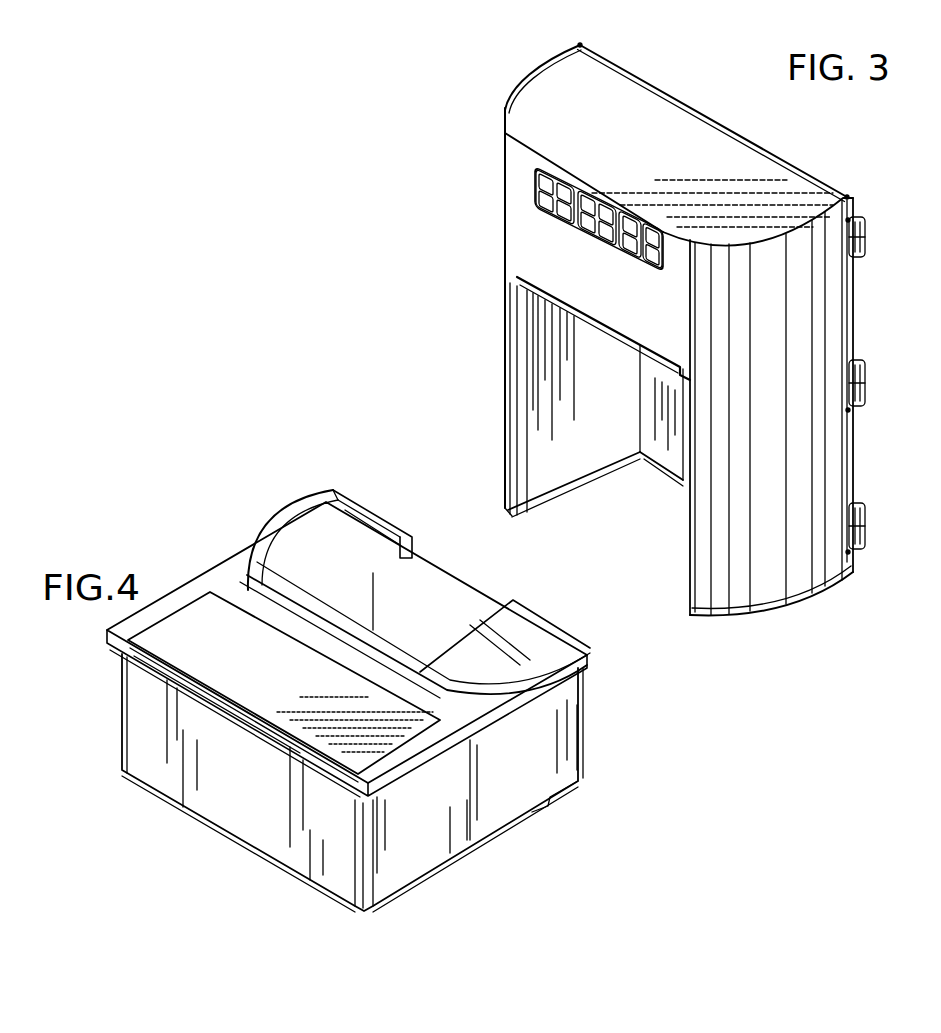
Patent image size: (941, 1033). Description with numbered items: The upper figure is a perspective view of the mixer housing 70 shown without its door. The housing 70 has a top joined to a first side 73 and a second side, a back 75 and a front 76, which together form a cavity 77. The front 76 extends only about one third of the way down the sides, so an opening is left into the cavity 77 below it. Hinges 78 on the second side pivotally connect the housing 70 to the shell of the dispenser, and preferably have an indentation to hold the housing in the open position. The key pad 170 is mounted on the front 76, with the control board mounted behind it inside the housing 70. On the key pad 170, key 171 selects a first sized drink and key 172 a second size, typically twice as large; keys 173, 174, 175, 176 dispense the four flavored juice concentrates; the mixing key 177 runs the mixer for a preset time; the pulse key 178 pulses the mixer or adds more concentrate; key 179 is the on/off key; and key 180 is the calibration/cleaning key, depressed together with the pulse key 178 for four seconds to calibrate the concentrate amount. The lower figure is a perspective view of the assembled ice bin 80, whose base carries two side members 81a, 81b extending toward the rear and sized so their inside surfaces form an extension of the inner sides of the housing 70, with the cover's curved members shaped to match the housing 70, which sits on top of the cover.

In FIG. 3, the mixer housing 70 is at (827, 607).
In FIG. 3, the first side 73 is at (580, 462).
In FIG. 3, the back 75 is at (670, 460).
In FIG. 3, the front 76 is at (631, 314).
In FIG. 3, the cavity 77 is at (547, 420).
In FIG. 3, the hinges 78 is at (866, 238).
In FIG. 3, the key pad 170 is at (536, 193).
In FIG. 3, the key 171 is at (516, 142).
In FIG. 3, the key 172 is at (566, 186).
In FIG. 3, the key 173 is at (582, 190).
In FIG. 3, the key 174 is at (602, 215).
In FIG. 3, the key 175 is at (540, 232).
In FIG. 3, the key 176 is at (582, 240).
In FIG. 3, the mixing key 177 is at (626, 226).
In FIG. 3, the pulse key 178 is at (622, 254).
In FIG. 3, the on/off key 179 is at (647, 237).
In FIG. 3, the calibration/cleaning key 180 is at (656, 276).
In FIG. 4, the ice bin 80 is at (567, 818).
In FIG. 4, the side member 81a is at (358, 610).
In FIG. 4, the side member 81b is at (563, 727).